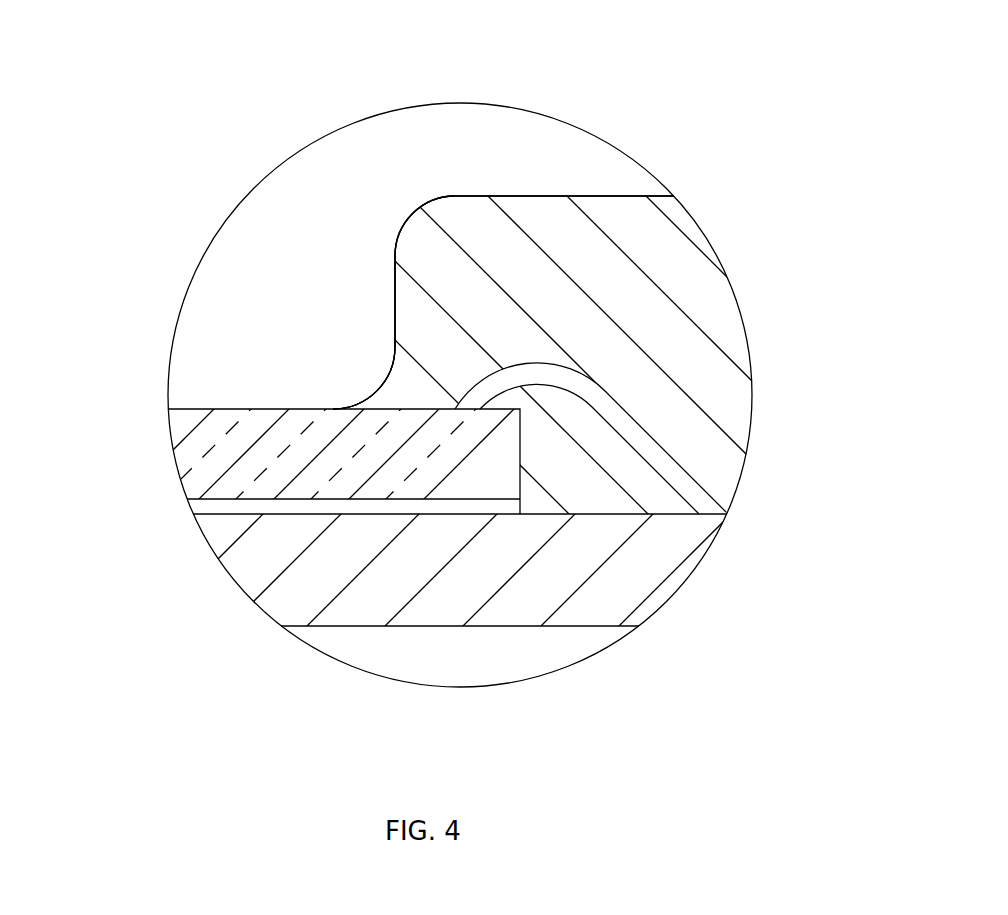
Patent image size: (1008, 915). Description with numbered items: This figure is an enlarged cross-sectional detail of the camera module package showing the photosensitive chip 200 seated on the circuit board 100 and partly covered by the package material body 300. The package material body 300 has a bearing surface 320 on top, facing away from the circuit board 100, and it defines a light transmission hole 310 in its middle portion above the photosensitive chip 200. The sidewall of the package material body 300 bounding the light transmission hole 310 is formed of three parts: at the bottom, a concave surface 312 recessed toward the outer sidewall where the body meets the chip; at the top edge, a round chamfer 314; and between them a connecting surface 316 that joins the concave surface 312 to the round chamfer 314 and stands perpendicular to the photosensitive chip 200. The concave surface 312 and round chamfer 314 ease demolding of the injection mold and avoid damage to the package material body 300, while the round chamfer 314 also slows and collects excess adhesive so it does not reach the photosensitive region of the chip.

The circuit board 100 is at (660, 566).
The photosensitive chip 200 is at (240, 456).
The package material body 300 is at (683, 340).
The light transmission hole 310 is at (224, 368).
The concave surface 312 is at (380, 388).
The round chamfer 314 is at (412, 215).
The connecting surface 316 is at (394, 300).
The bearing surface 320 is at (600, 196).